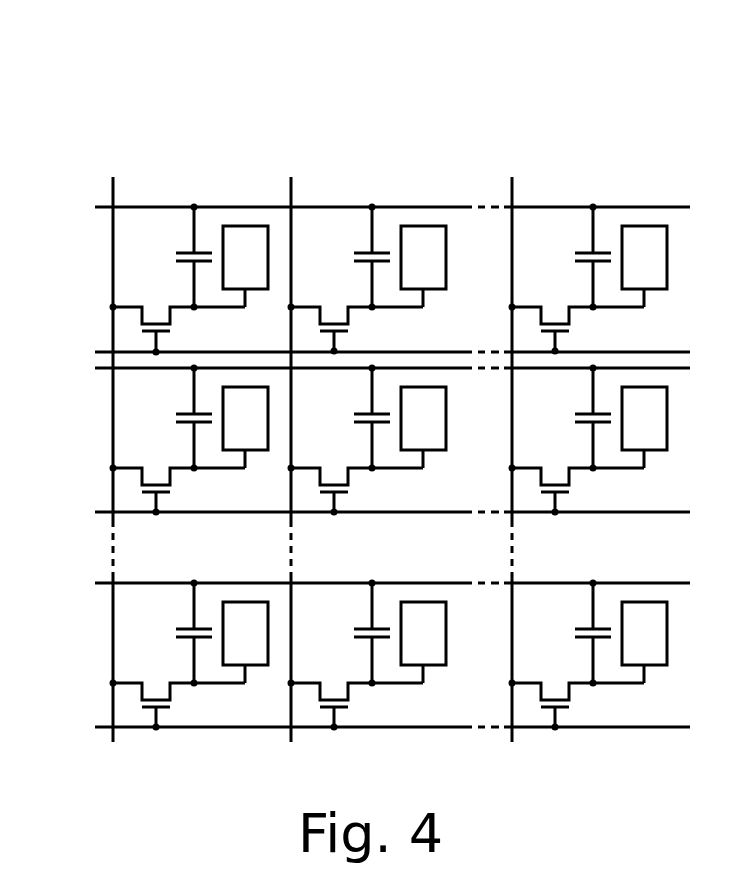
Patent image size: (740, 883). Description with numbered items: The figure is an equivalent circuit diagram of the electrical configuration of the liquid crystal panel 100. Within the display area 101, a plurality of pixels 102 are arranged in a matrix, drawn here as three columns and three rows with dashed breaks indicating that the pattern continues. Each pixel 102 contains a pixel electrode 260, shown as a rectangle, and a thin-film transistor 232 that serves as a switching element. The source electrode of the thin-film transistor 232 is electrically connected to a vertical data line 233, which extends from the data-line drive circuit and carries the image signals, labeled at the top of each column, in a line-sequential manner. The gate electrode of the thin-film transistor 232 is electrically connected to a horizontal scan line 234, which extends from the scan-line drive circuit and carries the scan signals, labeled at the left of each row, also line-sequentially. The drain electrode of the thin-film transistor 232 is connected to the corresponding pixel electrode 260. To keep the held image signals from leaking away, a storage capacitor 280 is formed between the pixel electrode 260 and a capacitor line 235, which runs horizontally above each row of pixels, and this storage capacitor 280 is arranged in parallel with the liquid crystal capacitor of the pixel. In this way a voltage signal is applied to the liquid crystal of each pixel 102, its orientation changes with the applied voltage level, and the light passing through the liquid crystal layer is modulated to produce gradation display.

The liquid crystal panel 100 is at (522, 95).
The display area 101 is at (426, 166).
The pixel 102 is at (128, 262).
The thin-film transistor 232 is at (185, 330).
The data line 233 is at (115, 198).
The scan line 234 is at (108, 345).
The capacitor line 235 is at (108, 206).
The pixel electrode 260 is at (247, 225).
The storage capacitor 280 is at (171, 257).